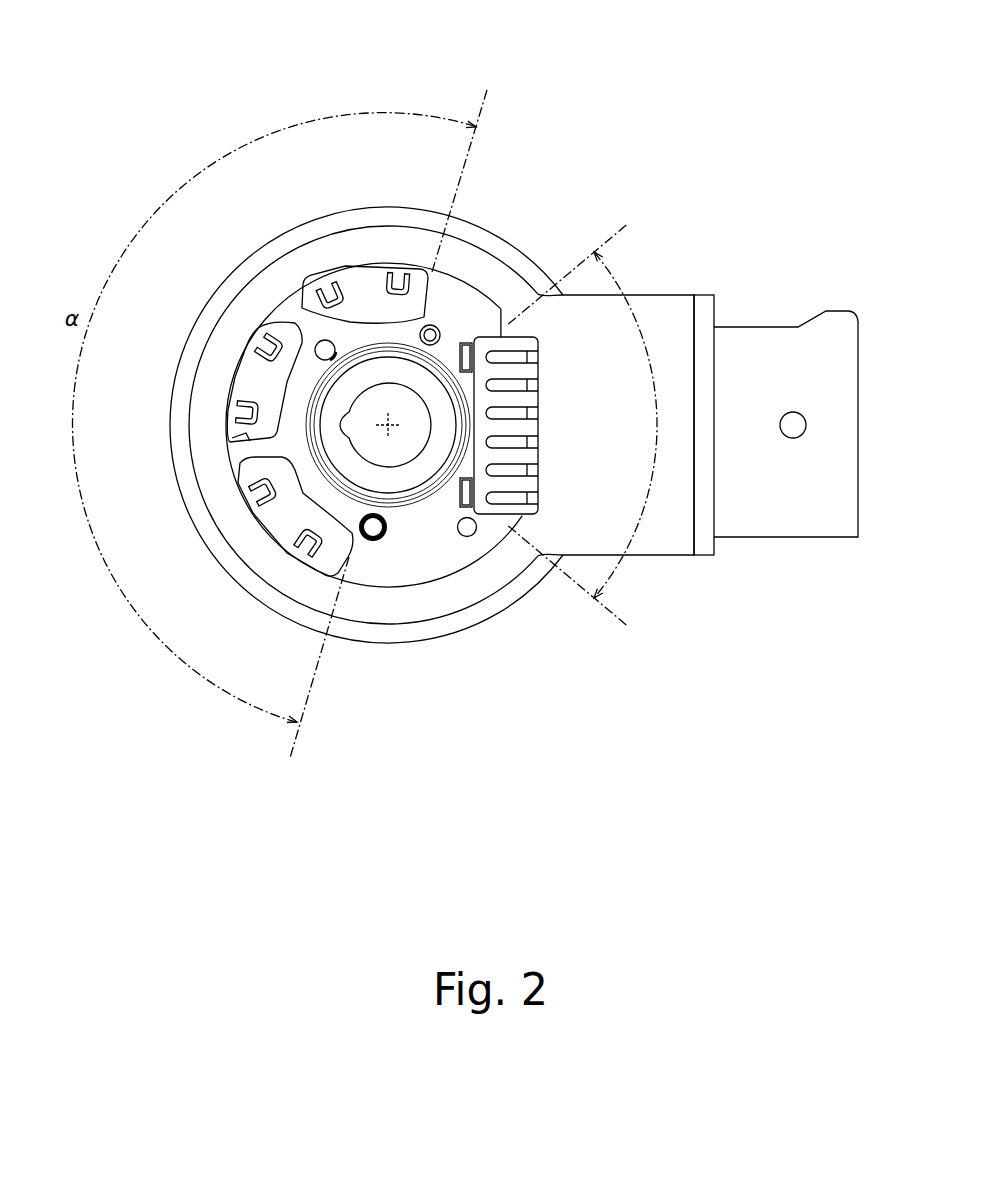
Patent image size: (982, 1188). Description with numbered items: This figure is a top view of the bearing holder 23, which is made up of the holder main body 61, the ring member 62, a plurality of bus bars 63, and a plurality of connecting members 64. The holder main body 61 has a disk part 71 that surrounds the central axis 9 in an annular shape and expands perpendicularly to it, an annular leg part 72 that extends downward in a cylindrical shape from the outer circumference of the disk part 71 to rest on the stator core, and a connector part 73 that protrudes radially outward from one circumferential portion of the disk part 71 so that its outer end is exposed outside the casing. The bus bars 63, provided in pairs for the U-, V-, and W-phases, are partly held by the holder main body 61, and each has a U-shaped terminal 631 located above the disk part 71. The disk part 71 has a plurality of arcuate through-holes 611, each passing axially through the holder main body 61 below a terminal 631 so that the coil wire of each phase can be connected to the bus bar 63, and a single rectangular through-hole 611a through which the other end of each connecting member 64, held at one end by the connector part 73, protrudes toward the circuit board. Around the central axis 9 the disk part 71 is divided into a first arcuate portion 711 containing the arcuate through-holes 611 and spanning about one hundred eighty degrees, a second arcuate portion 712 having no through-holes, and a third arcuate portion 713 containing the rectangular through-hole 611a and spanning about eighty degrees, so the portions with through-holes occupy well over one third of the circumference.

The bearing holder 23 is at (558, 153).
The central axis 9 is at (384, 422).
The holder main body 61 is at (644, 567).
The arcuate through-hole 611 is at (367, 299).
The rectangular through-hole 611a is at (490, 341).
The ring member 62 is at (417, 383).
The bus bar 63 is at (265, 325).
The U-shaped terminal 631 is at (250, 441).
The connecting member 64 is at (518, 500).
The disk part 71 is at (382, 505).
The first arcuate portion 711 is at (322, 490).
The second arcuate portion 712 is at (413, 546).
The third arcuate portion 713 is at (490, 513).
The annular leg part 72 is at (240, 568).
The connector part 73 is at (767, 507).